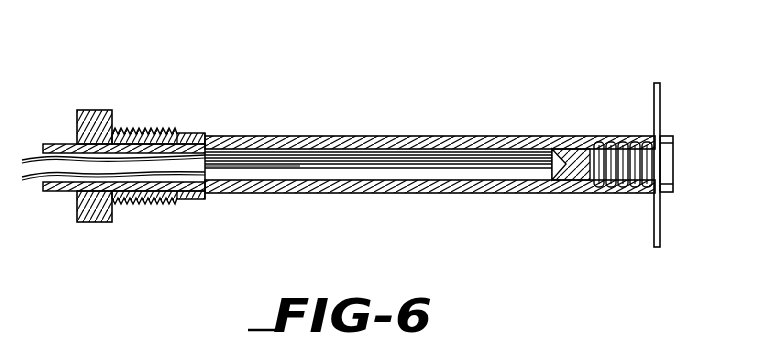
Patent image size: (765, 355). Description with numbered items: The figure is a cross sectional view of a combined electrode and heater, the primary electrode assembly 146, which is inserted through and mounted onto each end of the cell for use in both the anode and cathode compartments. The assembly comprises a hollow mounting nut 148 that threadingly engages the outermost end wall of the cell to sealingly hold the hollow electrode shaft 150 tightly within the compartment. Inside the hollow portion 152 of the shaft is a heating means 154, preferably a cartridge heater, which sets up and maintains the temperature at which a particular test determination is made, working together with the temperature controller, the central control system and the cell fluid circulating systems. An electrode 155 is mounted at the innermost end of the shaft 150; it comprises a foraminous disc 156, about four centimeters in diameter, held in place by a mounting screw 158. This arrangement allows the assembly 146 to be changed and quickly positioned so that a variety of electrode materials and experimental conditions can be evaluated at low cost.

The primary electrode assembly 146 is at (274, 111).
The hollow mounting nut 148 is at (92, 109).
The hollow electrode shaft 150 is at (416, 148).
The hollow portion 152 is at (459, 148).
The heating means 154 is at (237, 162).
The electrode 155 is at (343, 136).
The foraminous disc 156 is at (654, 103).
The mounting screw 158 is at (673, 128).